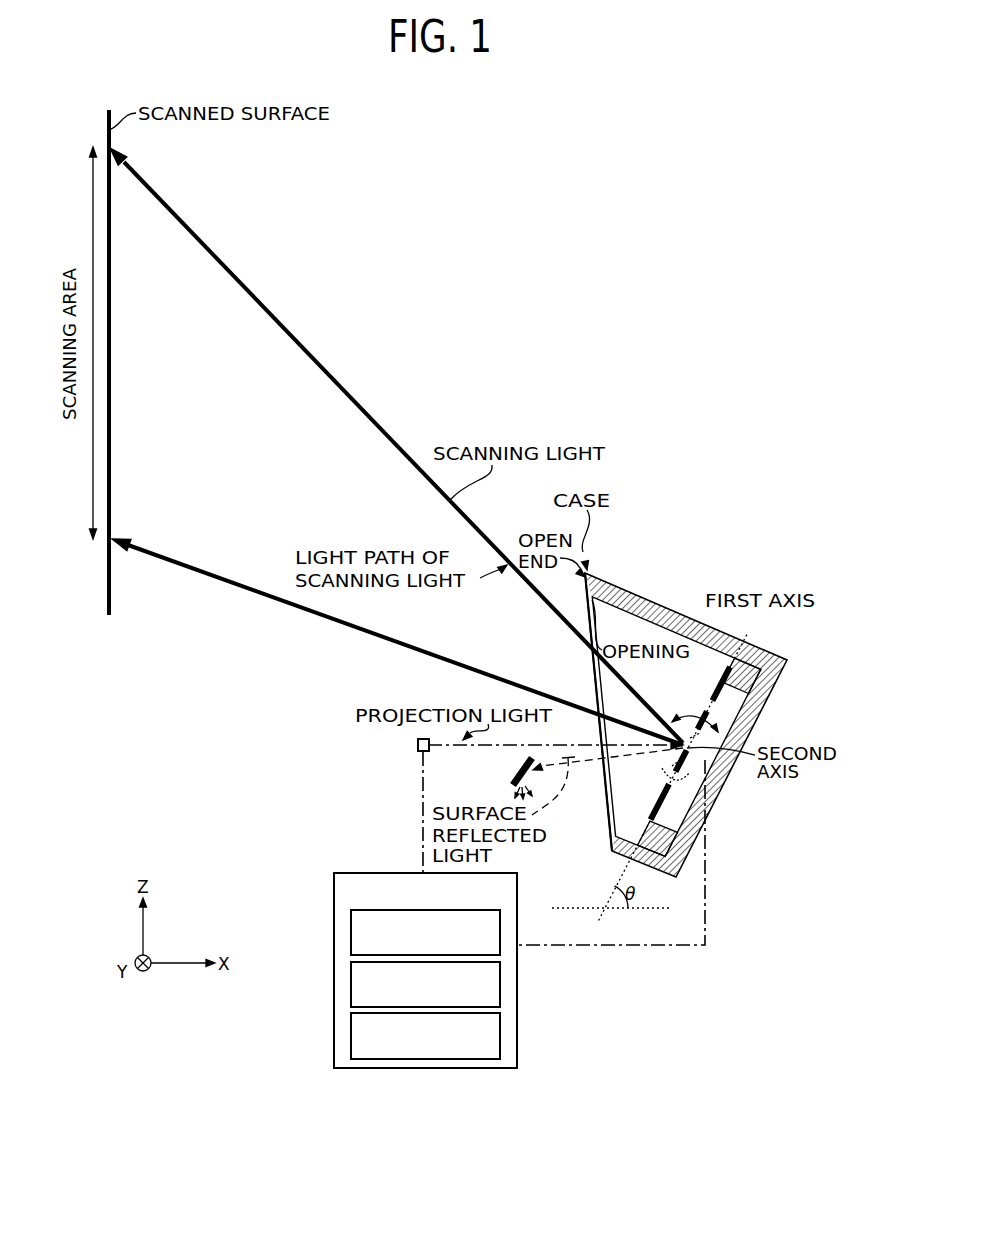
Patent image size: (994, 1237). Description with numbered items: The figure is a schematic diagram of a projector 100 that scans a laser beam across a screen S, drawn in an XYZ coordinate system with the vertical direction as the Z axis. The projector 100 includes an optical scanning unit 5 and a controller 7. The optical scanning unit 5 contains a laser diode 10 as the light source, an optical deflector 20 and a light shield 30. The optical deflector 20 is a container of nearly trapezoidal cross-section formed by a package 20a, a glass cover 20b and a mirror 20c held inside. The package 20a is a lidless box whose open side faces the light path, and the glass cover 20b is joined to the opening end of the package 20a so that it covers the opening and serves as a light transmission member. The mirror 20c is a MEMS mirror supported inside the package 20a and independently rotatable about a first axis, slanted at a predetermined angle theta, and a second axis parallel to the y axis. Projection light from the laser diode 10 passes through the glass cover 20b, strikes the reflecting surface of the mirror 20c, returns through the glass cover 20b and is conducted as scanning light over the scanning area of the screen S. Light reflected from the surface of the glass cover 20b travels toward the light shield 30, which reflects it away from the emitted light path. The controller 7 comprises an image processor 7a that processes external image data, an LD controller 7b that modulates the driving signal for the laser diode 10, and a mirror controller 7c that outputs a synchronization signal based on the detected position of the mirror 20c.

The screen S is at (107, 351).
The projector 100 is at (661, 462).
The optical deflector 20 is at (669, 701).
The package 20a is at (622, 585).
The glass cover 20b is at (606, 845).
The mirror 20c is at (714, 776).
The optical scanning unit 5 is at (340, 732).
The laser diode (LD) 10 is at (417, 745).
The light shield 30 is at (513, 772).
The controller 7 is at (362, 872).
The image processor 7a is at (351, 934).
The LD controller 7b is at (351, 983).
The mirror controller 7c is at (351, 1033).